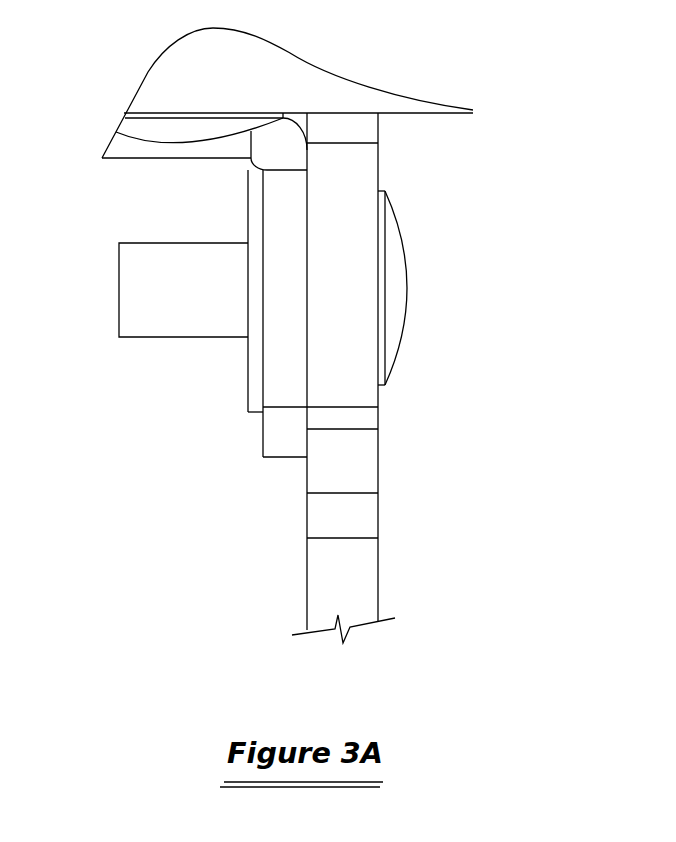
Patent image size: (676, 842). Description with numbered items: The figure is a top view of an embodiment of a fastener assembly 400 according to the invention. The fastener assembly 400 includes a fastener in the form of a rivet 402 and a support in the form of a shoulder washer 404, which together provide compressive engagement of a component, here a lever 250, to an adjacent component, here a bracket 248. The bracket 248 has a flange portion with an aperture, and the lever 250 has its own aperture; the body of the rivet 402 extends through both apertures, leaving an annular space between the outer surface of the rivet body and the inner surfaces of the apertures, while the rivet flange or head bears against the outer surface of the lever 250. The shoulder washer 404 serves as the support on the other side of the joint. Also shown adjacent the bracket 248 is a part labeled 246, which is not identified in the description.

The dome cover 246 is at (333, 85).
The bracket 248 is at (117, 142).
The lever 250 is at (363, 585).
The fastener assembly 400 is at (572, 33).
The rivet 402 is at (407, 277).
The shoulder washer 404 is at (250, 372).